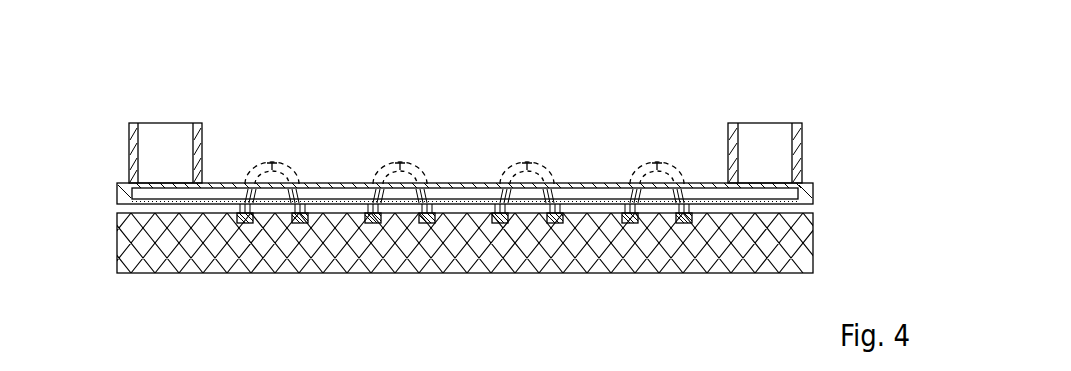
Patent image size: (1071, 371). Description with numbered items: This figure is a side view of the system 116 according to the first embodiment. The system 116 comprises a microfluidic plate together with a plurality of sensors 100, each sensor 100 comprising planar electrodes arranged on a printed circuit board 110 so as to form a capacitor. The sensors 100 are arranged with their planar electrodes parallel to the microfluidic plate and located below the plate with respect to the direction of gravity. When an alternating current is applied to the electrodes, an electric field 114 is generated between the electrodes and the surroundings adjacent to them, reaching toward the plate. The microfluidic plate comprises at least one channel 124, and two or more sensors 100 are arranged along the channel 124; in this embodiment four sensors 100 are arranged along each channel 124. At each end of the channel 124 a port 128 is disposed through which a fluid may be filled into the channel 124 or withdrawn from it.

The sensor 100 is at (274, 252).
The printed circuit board 110 is at (145, 242).
The electric field 114 is at (273, 160).
The system 116 is at (831, 129).
The channel 124 is at (303, 190).
The port 128 is at (163, 138).